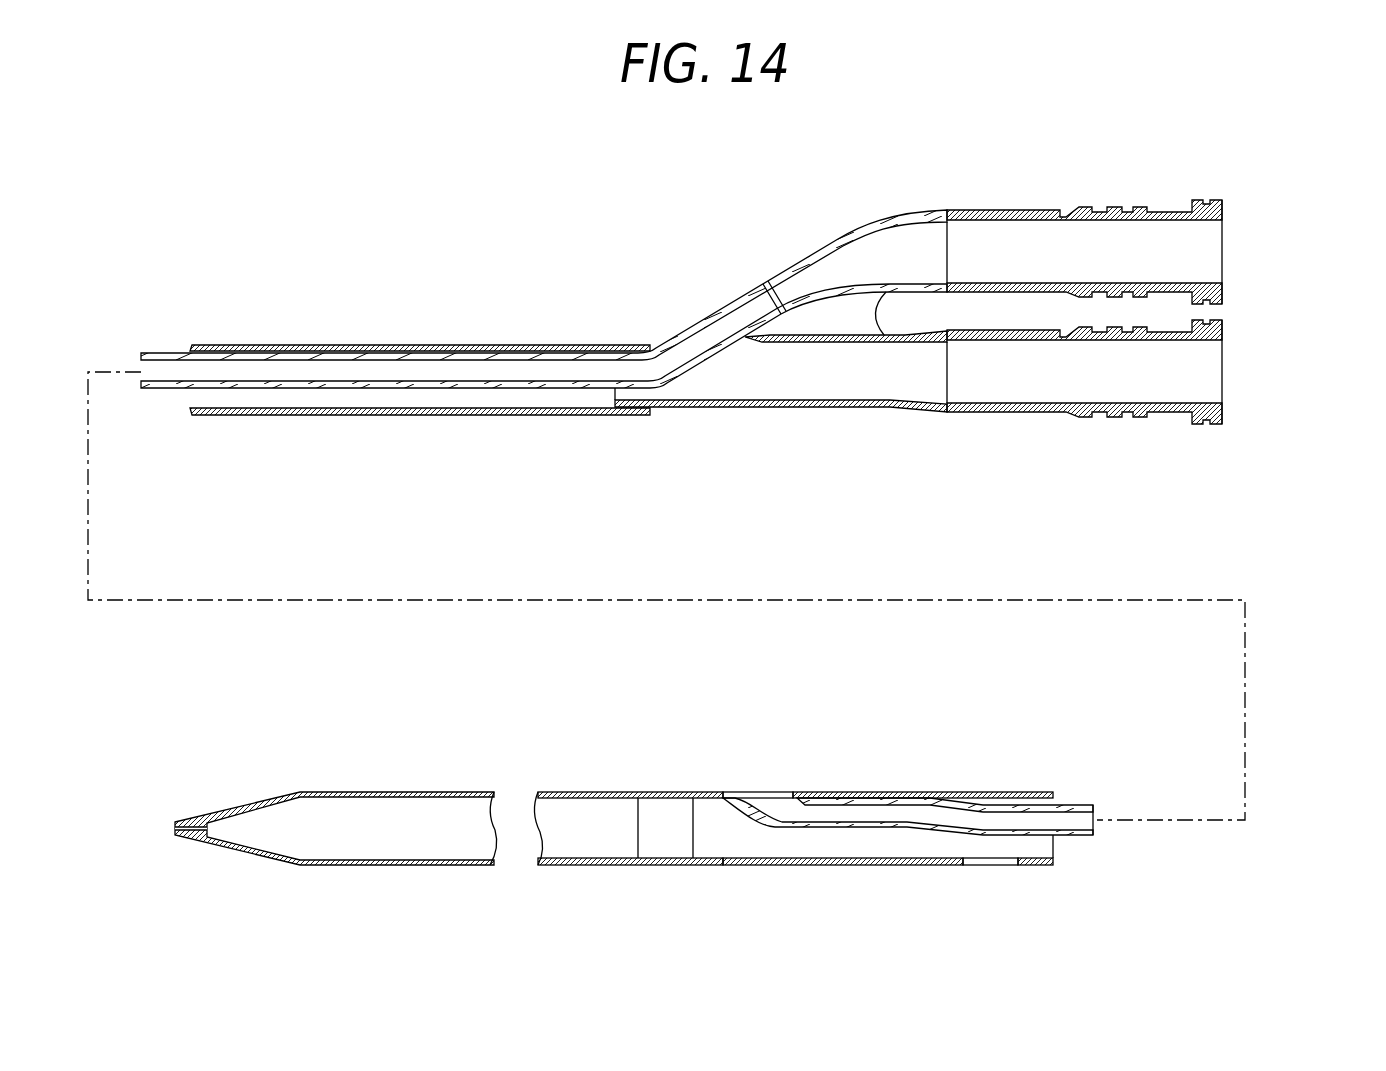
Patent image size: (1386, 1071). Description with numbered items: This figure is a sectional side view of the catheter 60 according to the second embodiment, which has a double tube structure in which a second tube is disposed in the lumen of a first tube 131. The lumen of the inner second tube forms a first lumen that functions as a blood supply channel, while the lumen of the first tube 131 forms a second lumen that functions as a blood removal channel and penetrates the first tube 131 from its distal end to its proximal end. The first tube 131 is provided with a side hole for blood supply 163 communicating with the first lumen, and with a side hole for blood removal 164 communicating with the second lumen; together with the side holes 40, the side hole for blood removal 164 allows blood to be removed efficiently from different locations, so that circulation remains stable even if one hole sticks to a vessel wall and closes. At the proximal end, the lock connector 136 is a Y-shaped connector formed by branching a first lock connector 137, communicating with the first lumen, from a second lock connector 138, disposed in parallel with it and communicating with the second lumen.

The side holes 40 is at (356, 792).
The catheter 60 is at (617, 316).
The first tube 131 is at (737, 865).
The lock connector 136 is at (1162, 312).
The first lock connector 137 is at (1238, 239).
The second lock connector 138 is at (1132, 372).
The side hole for blood supply 163 is at (762, 790).
The side hole for blood removal 164 is at (988, 865).